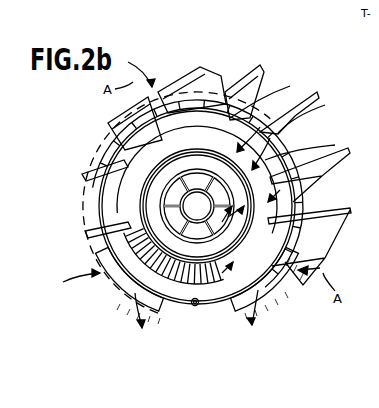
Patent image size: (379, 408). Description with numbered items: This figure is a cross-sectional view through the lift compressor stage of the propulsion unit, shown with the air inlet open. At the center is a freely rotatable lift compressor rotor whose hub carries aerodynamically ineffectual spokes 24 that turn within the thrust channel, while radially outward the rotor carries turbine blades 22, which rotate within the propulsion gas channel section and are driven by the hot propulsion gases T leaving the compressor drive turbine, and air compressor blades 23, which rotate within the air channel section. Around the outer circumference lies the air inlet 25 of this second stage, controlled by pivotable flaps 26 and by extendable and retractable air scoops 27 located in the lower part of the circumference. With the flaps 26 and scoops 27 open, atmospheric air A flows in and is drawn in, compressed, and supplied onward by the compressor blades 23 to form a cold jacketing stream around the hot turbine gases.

The turbine blades 22 is at (305, 247).
The air compressor blades 23 is at (194, 307).
The spokes 24 is at (176, 232).
The air inlet 25 is at (326, 138).
The pivotable flaps 26 is at (270, 126).
The air scoops 27 is at (118, 294).